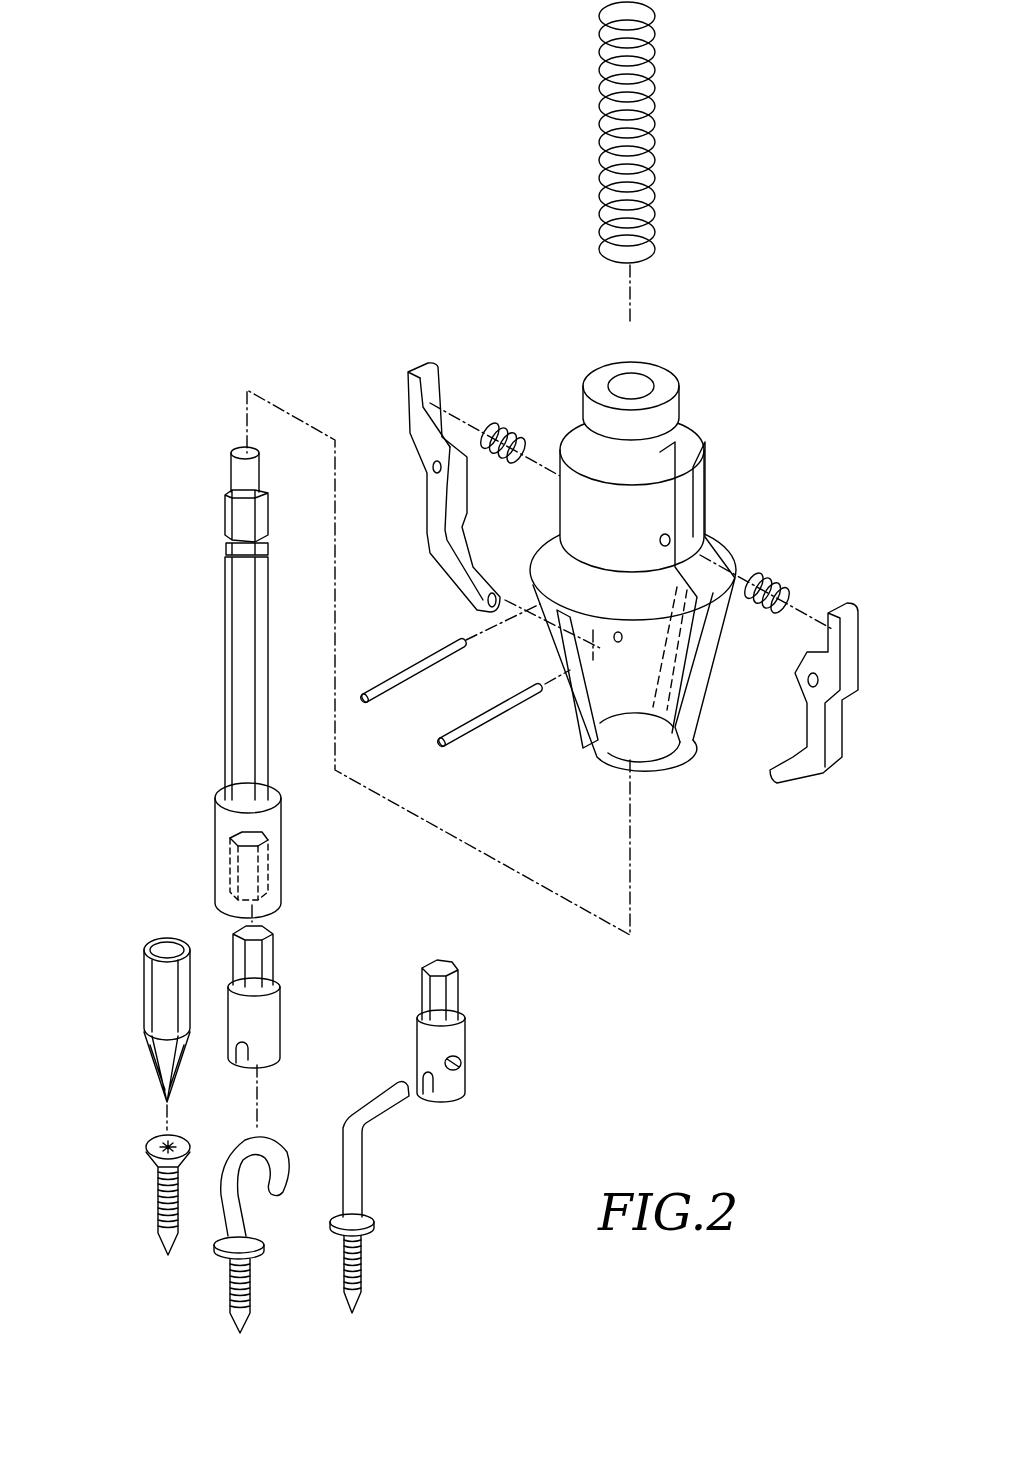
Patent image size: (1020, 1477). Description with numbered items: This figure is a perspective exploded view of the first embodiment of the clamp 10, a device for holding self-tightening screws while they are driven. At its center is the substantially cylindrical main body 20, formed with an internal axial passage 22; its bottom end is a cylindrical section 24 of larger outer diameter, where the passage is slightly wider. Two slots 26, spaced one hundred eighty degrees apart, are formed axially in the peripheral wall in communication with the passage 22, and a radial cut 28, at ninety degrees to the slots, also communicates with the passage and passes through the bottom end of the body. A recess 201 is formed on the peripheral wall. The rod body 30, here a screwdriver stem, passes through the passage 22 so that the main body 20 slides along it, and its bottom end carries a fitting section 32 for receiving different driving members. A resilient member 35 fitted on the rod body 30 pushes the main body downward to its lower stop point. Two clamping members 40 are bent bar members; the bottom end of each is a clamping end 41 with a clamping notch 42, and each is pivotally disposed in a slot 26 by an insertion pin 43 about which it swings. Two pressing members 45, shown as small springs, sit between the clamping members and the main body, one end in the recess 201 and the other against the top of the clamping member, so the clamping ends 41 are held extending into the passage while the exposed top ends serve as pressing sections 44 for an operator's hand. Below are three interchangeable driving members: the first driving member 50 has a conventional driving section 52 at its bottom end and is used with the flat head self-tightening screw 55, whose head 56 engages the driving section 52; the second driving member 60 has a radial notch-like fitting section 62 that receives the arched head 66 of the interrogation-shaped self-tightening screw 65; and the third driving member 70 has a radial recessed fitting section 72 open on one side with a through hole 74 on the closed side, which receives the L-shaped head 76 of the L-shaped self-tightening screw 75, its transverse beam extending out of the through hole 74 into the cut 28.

The clamp 10 is at (748, 228).
The main body 20 is at (650, 561).
The internal axial passage 22 is at (650, 380).
The recess 201 is at (672, 540).
The cylindrical section 24 is at (562, 700).
The slots 26 is at (700, 700).
The radial cut 28 is at (582, 713).
The rod body 30 is at (218, 648).
The fitting section 32 is at (207, 832).
The resilient member 35 is at (655, 114).
The clamping members 40 is at (619, 541).
The clamping end 41 is at (447, 556).
The clamping notch 42 is at (492, 590).
The insertion pin 43 is at (430, 655).
The pressing section 44 is at (412, 393).
The pressing members 45 is at (497, 432).
The first driving member 50 is at (125, 998).
The driving section 52 is at (148, 1070).
The flat head self-tightening screw 55 is at (125, 1175).
The head 56 is at (150, 1140).
The second driving member 60 is at (290, 1024).
The fitting section 62 is at (242, 1060).
The interrogation-shaped self-tightening screw 65 is at (270, 1198).
The arched head 66 is at (280, 1138).
The third driving member 70 is at (488, 1064).
The fitting section 72 is at (428, 1092).
The through hole 74 is at (465, 1068).
The L-shaped self-tightening screw 75 is at (390, 1197).
The L-shaped head 76 is at (368, 1120).